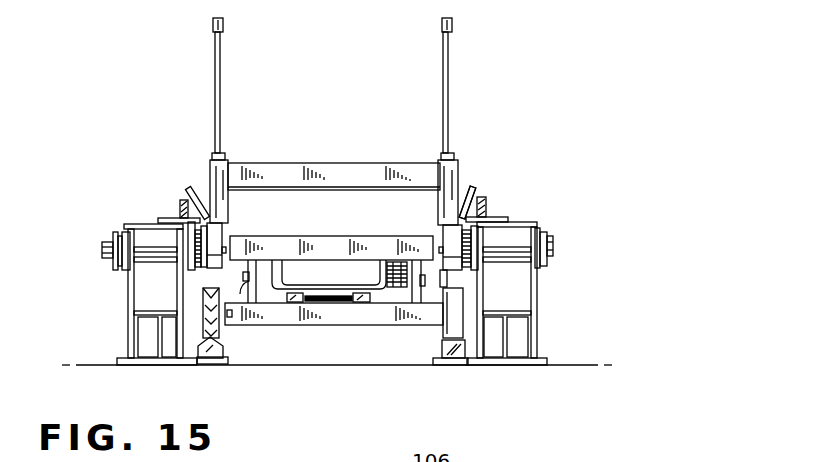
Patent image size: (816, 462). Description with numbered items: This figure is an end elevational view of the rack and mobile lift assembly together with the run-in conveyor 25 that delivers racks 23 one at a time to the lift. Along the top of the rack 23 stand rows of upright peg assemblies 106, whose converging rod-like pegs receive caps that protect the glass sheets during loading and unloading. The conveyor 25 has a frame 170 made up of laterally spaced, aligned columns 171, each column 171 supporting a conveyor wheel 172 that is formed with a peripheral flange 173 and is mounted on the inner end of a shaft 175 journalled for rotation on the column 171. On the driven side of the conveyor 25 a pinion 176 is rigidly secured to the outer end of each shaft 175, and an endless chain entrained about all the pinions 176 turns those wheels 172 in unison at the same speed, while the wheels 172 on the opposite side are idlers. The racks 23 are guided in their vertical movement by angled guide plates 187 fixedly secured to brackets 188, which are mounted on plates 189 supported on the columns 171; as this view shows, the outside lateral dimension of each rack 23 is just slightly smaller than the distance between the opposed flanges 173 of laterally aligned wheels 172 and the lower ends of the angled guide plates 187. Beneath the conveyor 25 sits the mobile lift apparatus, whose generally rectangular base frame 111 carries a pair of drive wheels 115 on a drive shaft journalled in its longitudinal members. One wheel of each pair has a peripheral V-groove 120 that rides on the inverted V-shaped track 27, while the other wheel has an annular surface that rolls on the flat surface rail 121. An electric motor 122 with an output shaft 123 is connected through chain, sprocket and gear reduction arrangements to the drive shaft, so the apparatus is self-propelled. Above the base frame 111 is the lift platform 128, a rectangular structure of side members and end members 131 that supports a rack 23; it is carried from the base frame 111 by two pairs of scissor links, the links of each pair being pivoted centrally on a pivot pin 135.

The peg assembly 106 is at (212, 79).
The rack 23 is at (463, 148).
The run-in conveyor 25 is at (557, 229).
The inverted V-shaped track 27 is at (223, 341).
The base frame 111 is at (369, 327).
The drive wheel 115 is at (201, 303).
The peripheral V-groove 120 is at (203, 327).
The flat surface rail 121 is at (443, 339).
The electric motor 122 is at (327, 305).
The output shaft 123 is at (384, 268).
The lift platform 128 is at (279, 234).
The end member 131 is at (310, 242).
The pivot pin 135 is at (241, 284).
The frame 170 is at (535, 306).
The column 171 is at (128, 290).
The conveyor wheel 172 is at (216, 230).
The peripheral flange 173 is at (207, 247).
The shaft 175 is at (155, 250).
The pinion 176 is at (113, 235).
The angled guide plate 187 is at (188, 187).
The bracket 188 is at (182, 202).
The plate 189 is at (143, 224).